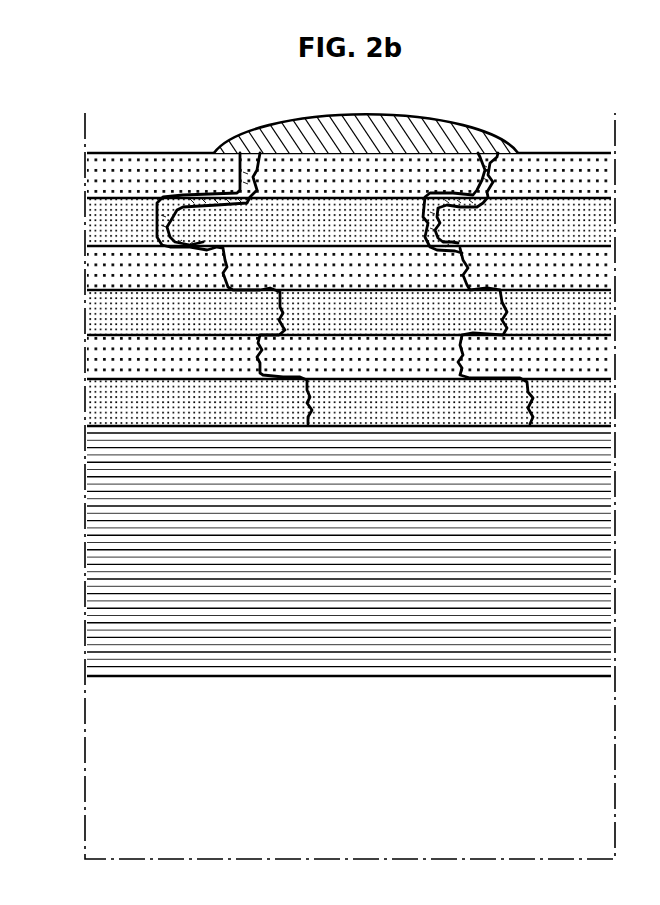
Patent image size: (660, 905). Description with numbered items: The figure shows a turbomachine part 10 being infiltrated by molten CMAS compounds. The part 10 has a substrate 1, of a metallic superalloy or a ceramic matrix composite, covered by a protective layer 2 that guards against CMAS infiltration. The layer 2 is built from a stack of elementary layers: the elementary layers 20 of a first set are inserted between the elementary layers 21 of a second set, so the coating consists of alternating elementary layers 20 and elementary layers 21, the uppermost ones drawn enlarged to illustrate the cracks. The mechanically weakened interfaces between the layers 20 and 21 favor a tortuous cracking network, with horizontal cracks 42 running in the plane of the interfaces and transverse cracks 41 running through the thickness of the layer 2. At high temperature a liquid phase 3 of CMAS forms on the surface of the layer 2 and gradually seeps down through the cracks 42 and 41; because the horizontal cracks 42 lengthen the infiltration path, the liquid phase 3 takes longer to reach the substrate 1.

The substrate 1 is at (118, 775).
The layer 2 is at (117, 553).
The liquid phase 3 is at (368, 137).
The turbomachine part 10 is at (323, 249).
The elementary layers of a first set 20 is at (117, 178).
The elementary layers of a second set 21 is at (117, 224).
The transverse cracks 41 is at (449, 232).
The horizontal cracks 42 is at (456, 192).